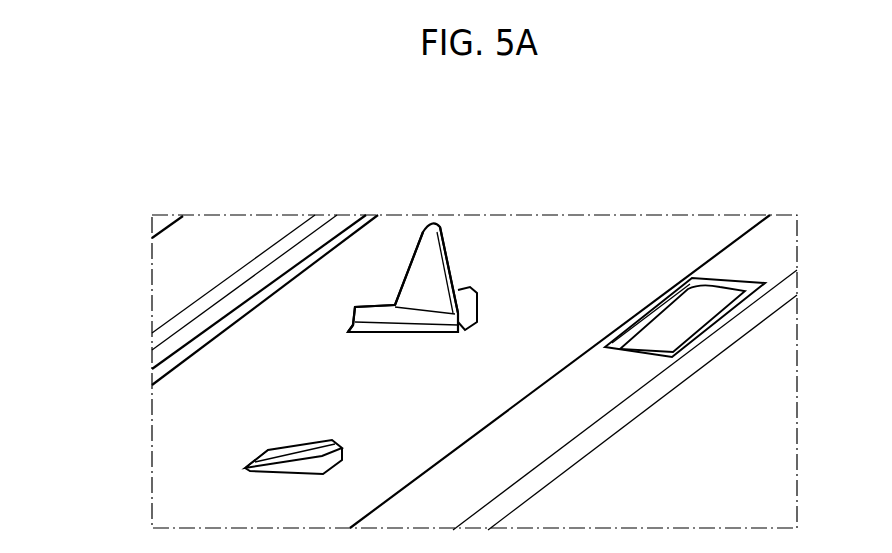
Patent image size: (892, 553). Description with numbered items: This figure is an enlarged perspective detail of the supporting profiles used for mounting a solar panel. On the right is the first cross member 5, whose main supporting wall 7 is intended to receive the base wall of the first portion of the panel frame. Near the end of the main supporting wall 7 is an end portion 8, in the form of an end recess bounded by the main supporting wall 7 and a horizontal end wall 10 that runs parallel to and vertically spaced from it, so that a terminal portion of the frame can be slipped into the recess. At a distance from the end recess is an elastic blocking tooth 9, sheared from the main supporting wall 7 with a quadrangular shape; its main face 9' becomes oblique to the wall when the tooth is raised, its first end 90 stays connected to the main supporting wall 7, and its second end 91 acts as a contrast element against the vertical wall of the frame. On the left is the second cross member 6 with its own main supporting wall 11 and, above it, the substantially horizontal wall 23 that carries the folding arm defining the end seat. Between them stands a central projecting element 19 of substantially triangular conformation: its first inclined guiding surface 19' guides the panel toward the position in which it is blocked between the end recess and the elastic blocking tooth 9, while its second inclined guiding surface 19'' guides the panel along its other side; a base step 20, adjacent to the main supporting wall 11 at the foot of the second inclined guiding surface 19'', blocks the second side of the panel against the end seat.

The first cross member 5 is at (647, 240).
The second cross member 6 is at (253, 357).
The main supporting wall 7 is at (447, 423).
The end portion 8 is at (680, 330).
The elastic blocking tooth 9 is at (313, 418).
The main face 9' is at (295, 415).
The horizontal end wall 10 is at (572, 407).
The main supporting wall 11 is at (182, 390).
The central projecting element 19 is at (413, 236).
The first inclined guiding surface 19' is at (494, 269).
The second inclined guiding surface 19'' is at (383, 232).
The base step 20 is at (382, 303).
The substantially horizontal wall 23 is at (203, 240).
The first end 90 is at (255, 460).
The second end 91 is at (342, 450).